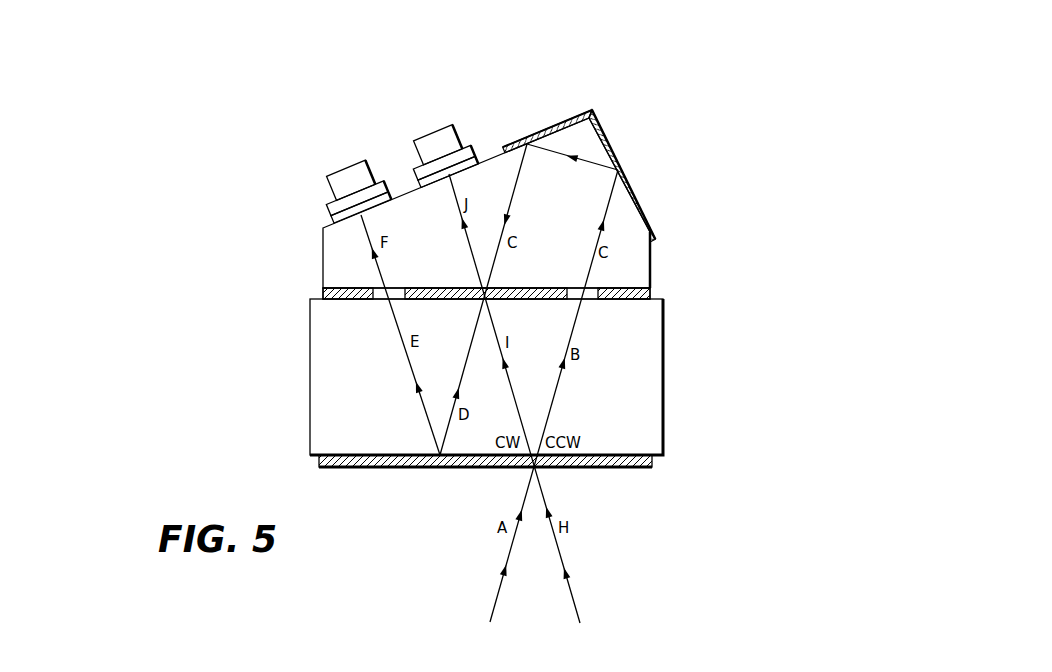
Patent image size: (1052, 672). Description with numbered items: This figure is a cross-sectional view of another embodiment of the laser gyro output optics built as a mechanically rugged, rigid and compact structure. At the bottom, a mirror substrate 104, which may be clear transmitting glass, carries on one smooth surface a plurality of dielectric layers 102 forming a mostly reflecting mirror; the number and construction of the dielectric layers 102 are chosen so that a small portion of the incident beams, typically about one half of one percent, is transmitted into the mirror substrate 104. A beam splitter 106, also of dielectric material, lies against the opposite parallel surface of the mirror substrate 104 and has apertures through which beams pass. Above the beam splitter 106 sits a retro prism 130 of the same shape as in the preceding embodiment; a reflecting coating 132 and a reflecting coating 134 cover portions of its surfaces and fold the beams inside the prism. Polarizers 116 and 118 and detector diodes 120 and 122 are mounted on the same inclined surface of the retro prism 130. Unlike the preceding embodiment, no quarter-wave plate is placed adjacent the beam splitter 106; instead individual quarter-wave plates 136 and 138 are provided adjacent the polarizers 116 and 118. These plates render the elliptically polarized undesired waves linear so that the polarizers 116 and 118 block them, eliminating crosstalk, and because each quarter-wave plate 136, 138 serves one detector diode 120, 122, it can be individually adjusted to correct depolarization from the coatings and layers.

The dielectric layers 102 is at (655, 468).
The mirror substrate 104 is at (653, 392).
The beam splitter 106 is at (653, 293).
The polarizer 116 is at (472, 151).
The polarizer 118 is at (329, 208).
The detector diode 120 is at (435, 132).
The detector diode 122 is at (348, 167).
The retro prism 130 is at (640, 268).
The reflecting coating 132 is at (629, 186).
The reflecting coating 134 is at (592, 110).
The quarter-wave plate 136 is at (477, 160).
The quarter-wave plate 138 is at (332, 220).